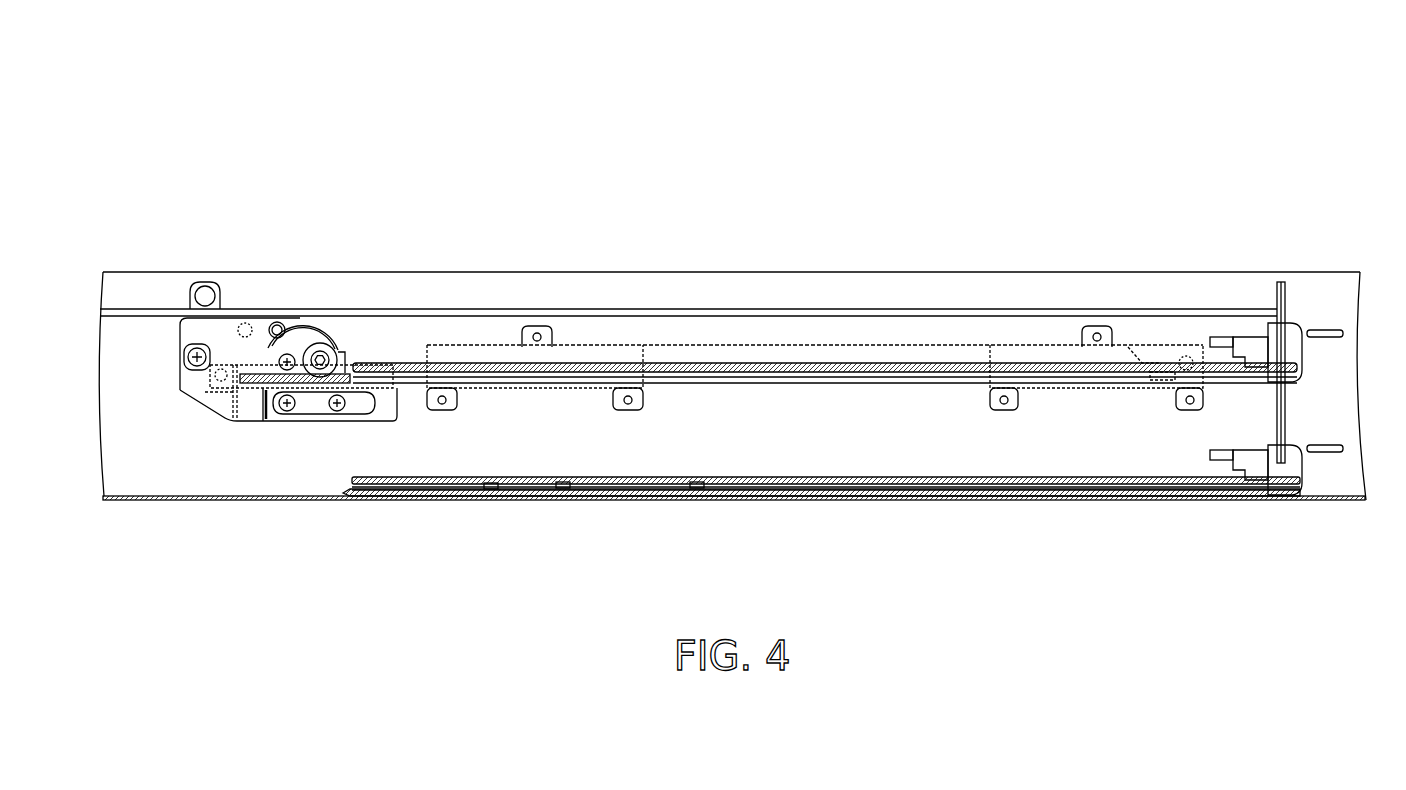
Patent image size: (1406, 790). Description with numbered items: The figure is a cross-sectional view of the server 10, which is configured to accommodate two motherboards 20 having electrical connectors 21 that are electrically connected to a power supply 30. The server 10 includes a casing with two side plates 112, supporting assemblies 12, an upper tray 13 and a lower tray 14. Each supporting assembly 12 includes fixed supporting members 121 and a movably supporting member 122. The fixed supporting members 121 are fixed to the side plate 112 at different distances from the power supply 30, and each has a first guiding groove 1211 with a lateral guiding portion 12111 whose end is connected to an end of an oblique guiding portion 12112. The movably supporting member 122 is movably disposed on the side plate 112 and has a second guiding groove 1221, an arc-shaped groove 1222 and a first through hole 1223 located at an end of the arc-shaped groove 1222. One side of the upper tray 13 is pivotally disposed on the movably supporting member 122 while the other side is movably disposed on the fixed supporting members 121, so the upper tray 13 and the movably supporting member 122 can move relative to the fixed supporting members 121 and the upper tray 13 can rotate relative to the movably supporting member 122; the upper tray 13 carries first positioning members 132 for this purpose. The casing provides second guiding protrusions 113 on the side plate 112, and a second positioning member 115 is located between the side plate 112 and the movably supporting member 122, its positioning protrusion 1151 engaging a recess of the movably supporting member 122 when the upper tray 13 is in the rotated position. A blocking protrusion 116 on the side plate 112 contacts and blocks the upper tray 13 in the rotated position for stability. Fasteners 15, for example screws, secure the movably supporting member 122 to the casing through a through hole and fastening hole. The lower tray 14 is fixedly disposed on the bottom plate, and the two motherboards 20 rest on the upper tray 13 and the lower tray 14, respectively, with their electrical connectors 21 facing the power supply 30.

The server 10 is at (222, 102).
The supporting assembly 12 is at (98, 98).
The fixed supporting member 121 is at (1067, 342).
The movably supporting member 122 is at (135, 537).
The side plate 112 is at (130, 352).
The second guiding protrusion 113 is at (283, 408).
The second positioning member 115 is at (227, 396).
The blocking protrusion 116 is at (205, 283).
The positioning protrusion 1151 is at (217, 379).
The second guiding groove 1221 is at (368, 407).
The arc-shaped groove 1222 is at (306, 330).
The first through hole 1223 is at (276, 320).
The first positioning member 132 is at (340, 352).
The upper tray 13 is at (913, 365).
The lower tray 14 is at (345, 489).
The fastener 15 is at (188, 360).
The motherboard 20 is at (836, 363).
The electrical connector 21 is at (1243, 345).
The first guiding groove 1211 is at (1160, 375).
The lateral guiding portion 12111 is at (1181, 358).
The oblique guiding portion 12112 is at (1144, 356).
The power supply 30 is at (1338, 376).